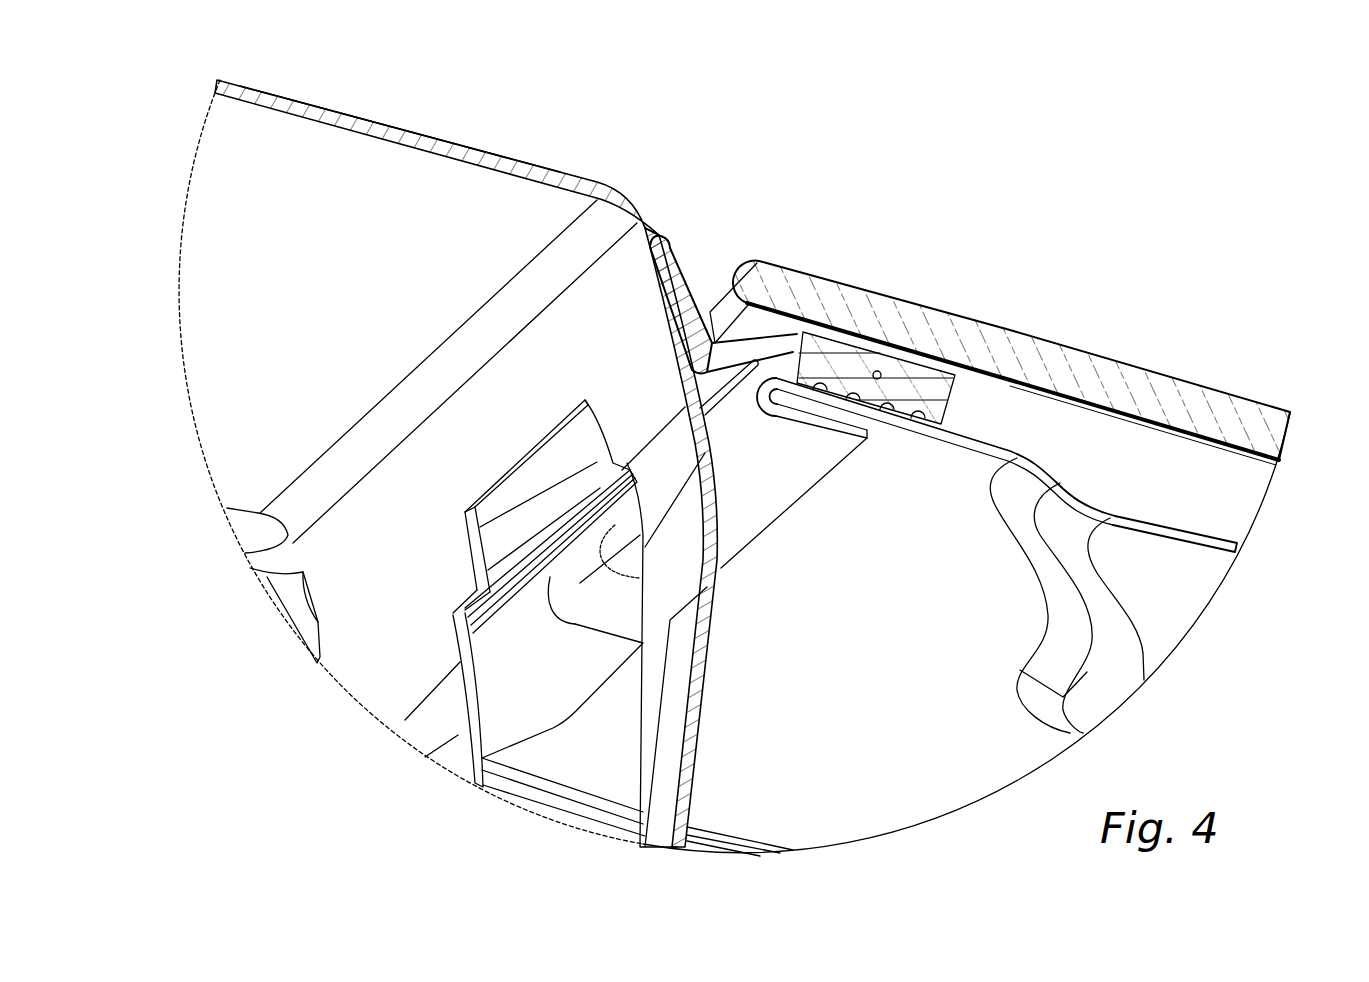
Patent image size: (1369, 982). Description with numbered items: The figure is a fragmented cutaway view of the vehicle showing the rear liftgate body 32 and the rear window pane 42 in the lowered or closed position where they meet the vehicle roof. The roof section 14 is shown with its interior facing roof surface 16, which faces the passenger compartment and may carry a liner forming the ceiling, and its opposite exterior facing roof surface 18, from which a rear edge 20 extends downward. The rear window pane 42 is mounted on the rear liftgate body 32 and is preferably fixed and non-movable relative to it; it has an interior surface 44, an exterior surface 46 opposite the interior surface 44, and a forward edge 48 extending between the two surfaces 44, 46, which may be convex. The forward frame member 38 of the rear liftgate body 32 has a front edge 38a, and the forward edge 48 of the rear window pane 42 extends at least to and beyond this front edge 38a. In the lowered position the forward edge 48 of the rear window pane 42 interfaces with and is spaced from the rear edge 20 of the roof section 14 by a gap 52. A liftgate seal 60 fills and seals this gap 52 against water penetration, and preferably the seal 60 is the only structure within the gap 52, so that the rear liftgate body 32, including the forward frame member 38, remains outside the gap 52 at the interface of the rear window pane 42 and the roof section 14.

The roof section 14 is at (457, 150).
The interior facing roof surface 16 is at (267, 305).
The exterior facing roof surface 18 is at (377, 120).
The rear edge 20 is at (645, 228).
The rear liftgate body 32 is at (1193, 537).
The forward frame member 38 is at (800, 465).
The front edge 38a is at (718, 425).
The rear window pane 42 is at (1135, 380).
The interior surface 44 is at (1010, 380).
The exterior surface 46 is at (900, 296).
The forward edge 48 is at (740, 290).
The gap 52 is at (709, 254).
The liftgate seal 60 is at (965, 405).